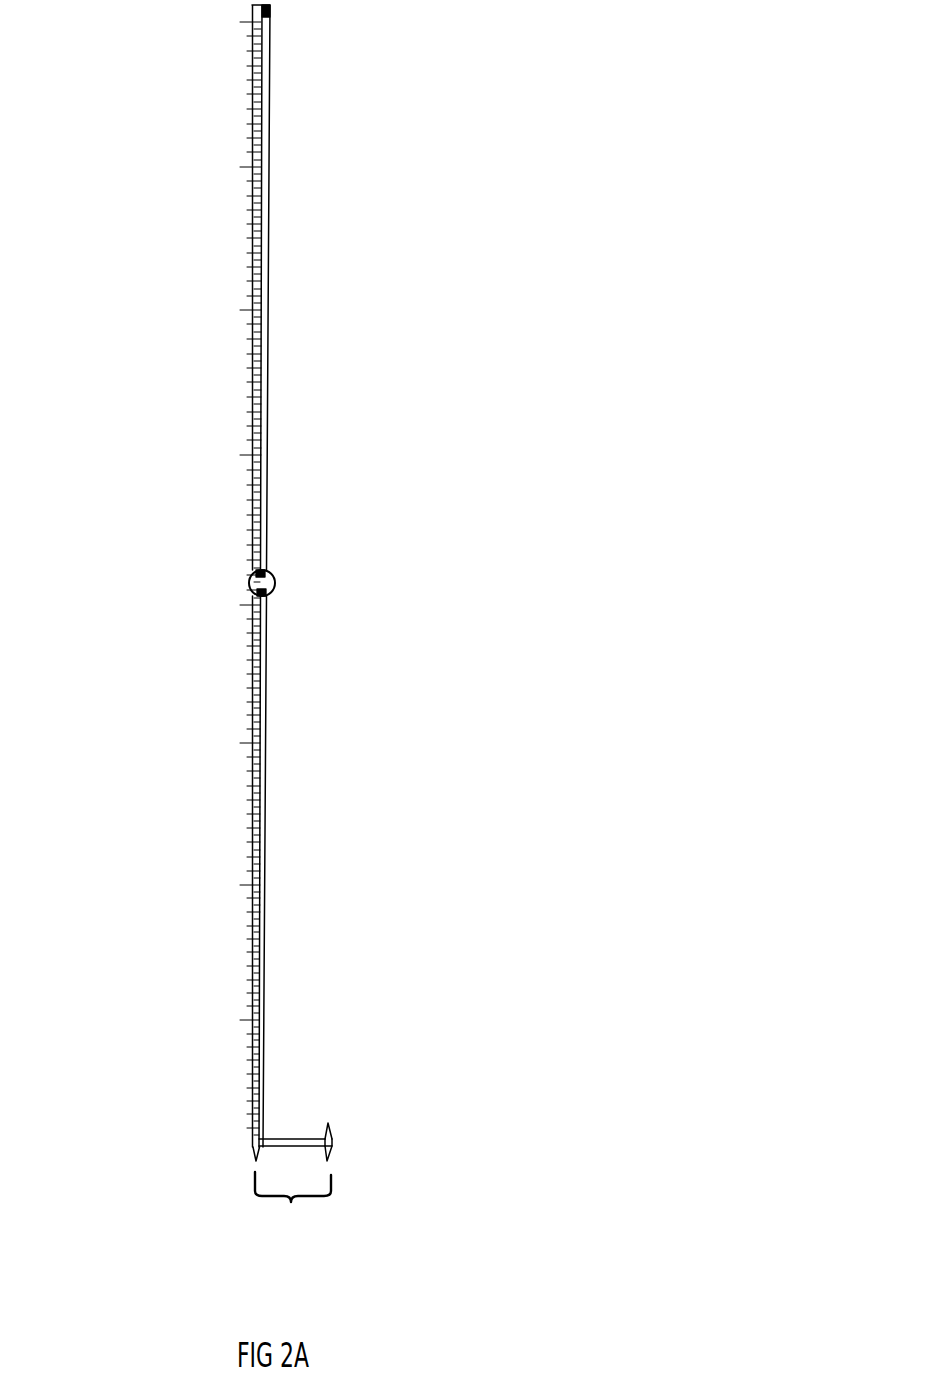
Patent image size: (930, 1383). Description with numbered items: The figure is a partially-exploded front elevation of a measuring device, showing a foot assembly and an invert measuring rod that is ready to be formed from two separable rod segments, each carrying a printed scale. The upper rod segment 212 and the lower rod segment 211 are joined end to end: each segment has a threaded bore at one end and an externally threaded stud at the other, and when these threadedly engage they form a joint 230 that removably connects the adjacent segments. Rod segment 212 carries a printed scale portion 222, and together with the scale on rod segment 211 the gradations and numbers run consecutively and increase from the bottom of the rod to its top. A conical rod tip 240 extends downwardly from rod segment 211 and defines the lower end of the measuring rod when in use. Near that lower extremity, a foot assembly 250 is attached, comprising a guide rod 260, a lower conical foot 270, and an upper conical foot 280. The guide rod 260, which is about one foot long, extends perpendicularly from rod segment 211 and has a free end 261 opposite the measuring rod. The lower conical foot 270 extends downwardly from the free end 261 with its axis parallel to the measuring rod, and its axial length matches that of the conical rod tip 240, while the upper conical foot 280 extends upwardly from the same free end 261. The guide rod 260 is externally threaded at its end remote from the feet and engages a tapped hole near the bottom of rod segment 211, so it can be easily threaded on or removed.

The rod segment 212 is at (268, 102).
The rod segment 211 is at (262, 688).
The printed scale portion 222 is at (252, 222).
The joint 230 is at (276, 578).
The conical rod tip 240 is at (250, 1158).
The foot assembly 250 is at (296, 1212).
The guide rod 260 is at (283, 1140).
The upper conical foot 280 is at (331, 1128).
The free end 261 is at (334, 1137).
The lower conical foot 270 is at (331, 1157).